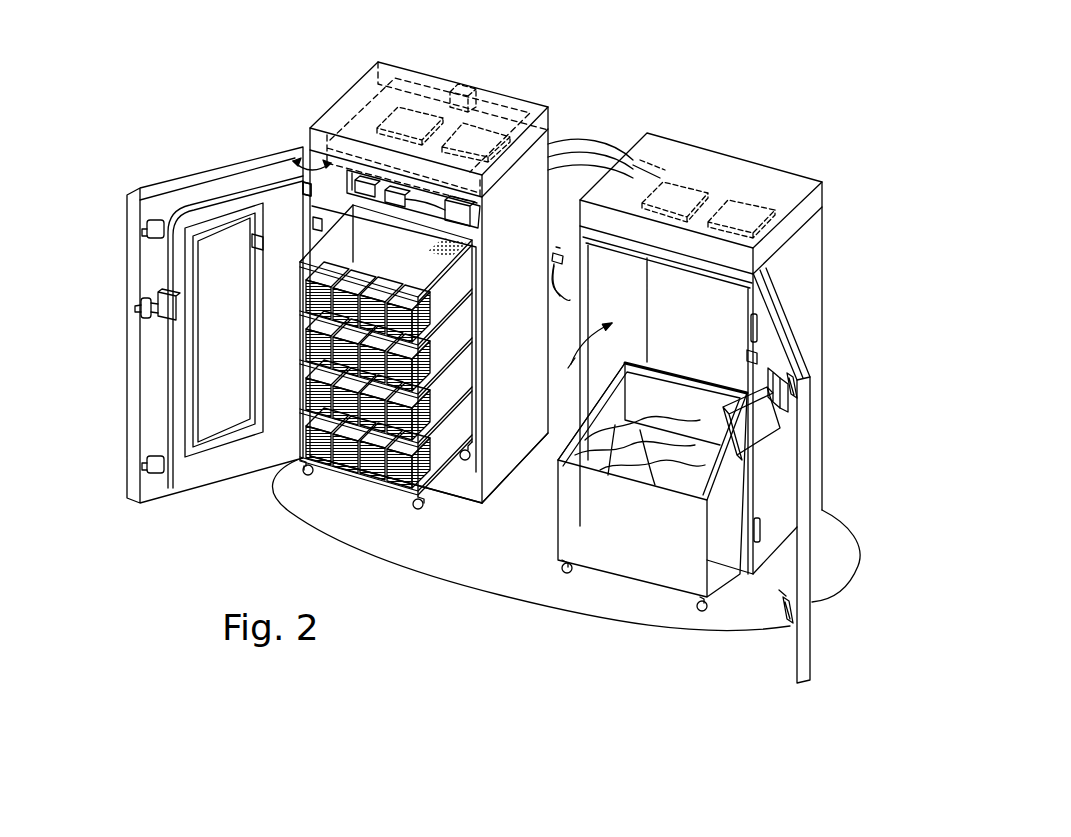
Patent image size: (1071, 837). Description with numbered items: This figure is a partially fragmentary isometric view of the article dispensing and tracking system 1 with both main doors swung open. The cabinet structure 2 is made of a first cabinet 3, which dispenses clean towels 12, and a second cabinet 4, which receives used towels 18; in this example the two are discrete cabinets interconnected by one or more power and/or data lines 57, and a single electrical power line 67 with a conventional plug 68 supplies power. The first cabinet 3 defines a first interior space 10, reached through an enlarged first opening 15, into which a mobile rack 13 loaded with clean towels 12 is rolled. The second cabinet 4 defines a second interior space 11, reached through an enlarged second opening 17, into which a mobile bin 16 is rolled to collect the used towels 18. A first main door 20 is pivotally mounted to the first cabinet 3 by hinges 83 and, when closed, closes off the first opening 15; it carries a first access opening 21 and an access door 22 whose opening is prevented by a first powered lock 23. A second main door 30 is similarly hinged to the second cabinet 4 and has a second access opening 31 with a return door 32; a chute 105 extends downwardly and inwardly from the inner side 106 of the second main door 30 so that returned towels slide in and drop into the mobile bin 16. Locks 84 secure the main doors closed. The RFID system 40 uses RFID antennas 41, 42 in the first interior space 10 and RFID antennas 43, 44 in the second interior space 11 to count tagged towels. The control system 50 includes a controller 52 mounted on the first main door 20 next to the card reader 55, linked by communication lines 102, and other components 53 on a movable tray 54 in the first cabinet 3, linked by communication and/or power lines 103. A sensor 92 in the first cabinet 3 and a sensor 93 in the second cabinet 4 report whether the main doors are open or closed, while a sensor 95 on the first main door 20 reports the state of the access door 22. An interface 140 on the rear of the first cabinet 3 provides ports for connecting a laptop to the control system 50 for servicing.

The article dispensing and tracking system 1 is at (848, 133).
The cabinet structure 2 is at (792, 117).
The first cabinet 3 is at (337, 101).
The second cabinet 4 is at (822, 290).
The first interior space 10 is at (466, 478).
The second interior space 11 is at (589, 338).
The clean towels 12 is at (367, 375).
The mobile rack 13 is at (400, 484).
The enlarged first opening 15 is at (467, 503).
The mobile bin 16 is at (611, 578).
The enlarged second opening 17 is at (566, 373).
The used towels 18 is at (557, 478).
The first main door 20 is at (173, 348).
The first access opening 21 is at (165, 350).
The access door 22 is at (210, 362).
The first powered lock 23 is at (184, 326).
The second main door 30 is at (812, 643).
The second access opening 31 is at (781, 410).
The return door 32 is at (872, 405).
The RFID system 40 is at (340, 132).
The RFID antenna 41 is at (423, 107).
The RFID antenna 42 is at (488, 128).
The RFID antenna 43 is at (679, 186).
The RFID antenna 44 is at (743, 202).
The control system 50 is at (318, 224).
The controller 52 is at (160, 292).
The other components 53 is at (470, 213).
The tray 54 is at (312, 187).
The card reader 55 is at (144, 310).
The power and/or data lines 57 is at (592, 142).
The electrical power line 67 is at (566, 297).
The plug 68 is at (560, 250).
The hinges 83 is at (302, 186).
The locks 84 is at (148, 232).
The sensor 92 is at (302, 262).
The sensor 93 is at (746, 355).
The sensor 95 is at (246, 243).
The communication lines 102 is at (154, 322).
The communication and/or power lines 103 is at (187, 207).
The chute 105 is at (766, 440).
The inner side 106 is at (784, 598).
The interface 140 is at (473, 86).